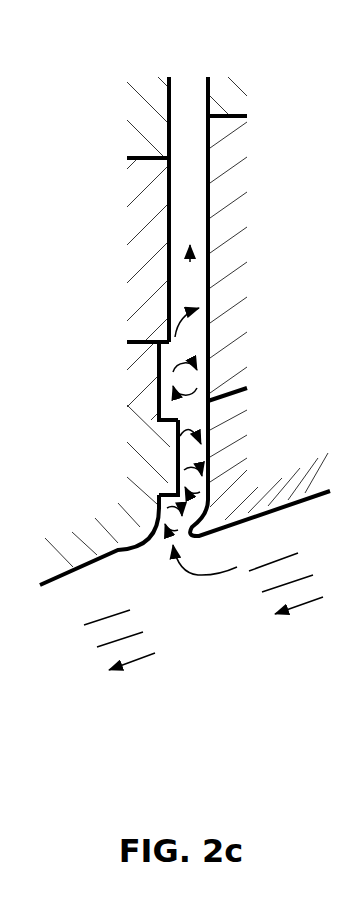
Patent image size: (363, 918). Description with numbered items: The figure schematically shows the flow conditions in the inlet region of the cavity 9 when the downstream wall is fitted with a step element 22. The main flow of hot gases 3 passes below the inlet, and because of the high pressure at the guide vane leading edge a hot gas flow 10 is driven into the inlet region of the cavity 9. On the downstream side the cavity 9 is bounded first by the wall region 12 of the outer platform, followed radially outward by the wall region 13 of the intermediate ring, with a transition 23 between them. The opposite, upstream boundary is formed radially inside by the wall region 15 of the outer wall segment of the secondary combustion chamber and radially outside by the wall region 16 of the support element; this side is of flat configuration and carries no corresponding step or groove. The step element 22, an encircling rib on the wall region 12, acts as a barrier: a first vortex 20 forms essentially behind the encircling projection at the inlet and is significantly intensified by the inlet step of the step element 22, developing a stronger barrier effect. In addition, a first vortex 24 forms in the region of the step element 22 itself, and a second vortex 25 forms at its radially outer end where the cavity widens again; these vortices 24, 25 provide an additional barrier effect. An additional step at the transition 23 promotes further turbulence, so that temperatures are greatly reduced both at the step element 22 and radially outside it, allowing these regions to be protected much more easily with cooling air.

The hot gases 3 is at (303, 608).
The cavity 9 is at (185, 196).
The hot gas flow 10 is at (198, 575).
The wall region of the outer platform 12 is at (155, 380).
The wall region of the intermediate ring 13 is at (163, 227).
The wall region of the outer wall segment 15 is at (213, 450).
The wall region of the support element 16 is at (214, 250).
The first vortex 20 is at (173, 521).
The step element 22 is at (168, 458).
The transition 23 is at (163, 337).
The first vortex in the region of the step element 24 is at (195, 482).
The second vortex 25 is at (183, 378).